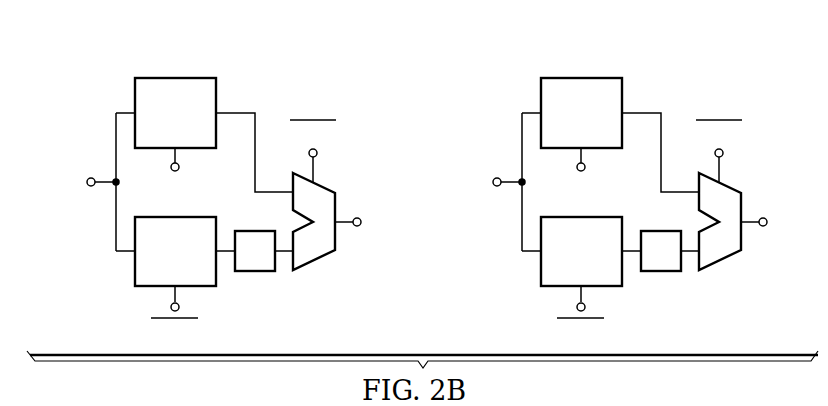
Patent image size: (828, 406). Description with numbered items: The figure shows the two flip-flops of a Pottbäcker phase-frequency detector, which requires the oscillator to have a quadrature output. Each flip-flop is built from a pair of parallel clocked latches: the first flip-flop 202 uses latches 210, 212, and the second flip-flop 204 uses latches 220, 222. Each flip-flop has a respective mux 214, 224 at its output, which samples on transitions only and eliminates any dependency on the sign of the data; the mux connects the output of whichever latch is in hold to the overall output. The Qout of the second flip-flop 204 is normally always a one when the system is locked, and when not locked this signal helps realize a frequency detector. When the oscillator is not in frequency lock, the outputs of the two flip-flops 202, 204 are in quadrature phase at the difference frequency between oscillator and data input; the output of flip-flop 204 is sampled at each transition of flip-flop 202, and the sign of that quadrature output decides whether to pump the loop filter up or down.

The flip-flop 202 is at (279, 79).
The flip-flop 204 is at (685, 79).
The latch 210 is at (135, 94).
The latch 212 is at (135, 270).
The mux 214 is at (320, 258).
The latch 220 is at (541, 94).
The latch 222 is at (541, 270).
The mux 224 is at (726, 258).